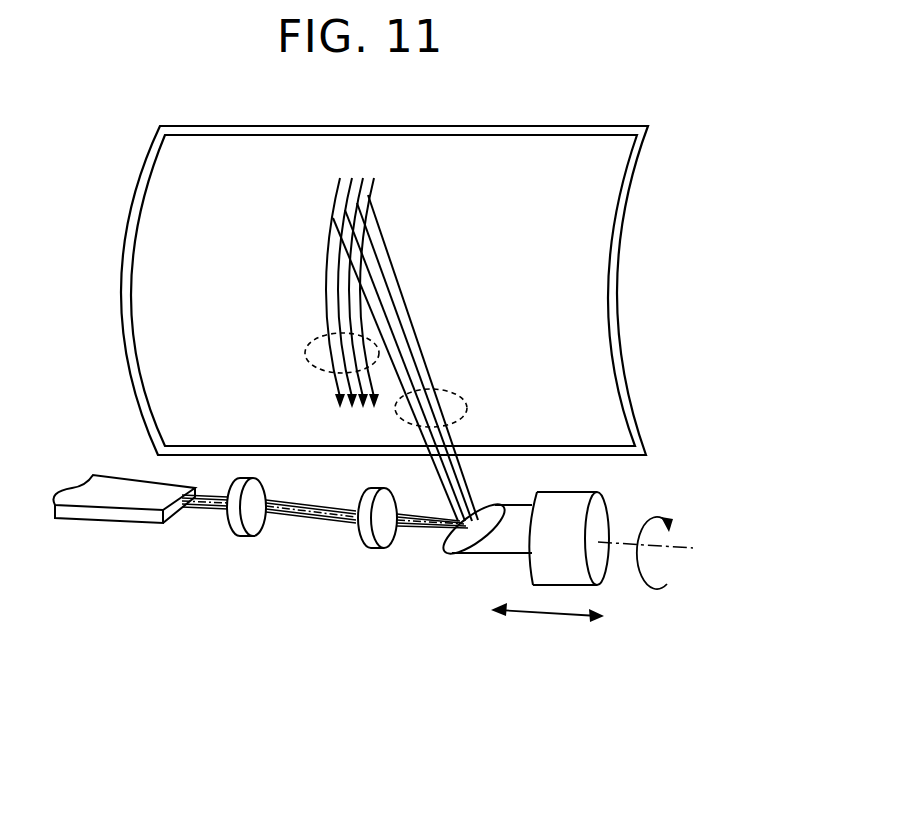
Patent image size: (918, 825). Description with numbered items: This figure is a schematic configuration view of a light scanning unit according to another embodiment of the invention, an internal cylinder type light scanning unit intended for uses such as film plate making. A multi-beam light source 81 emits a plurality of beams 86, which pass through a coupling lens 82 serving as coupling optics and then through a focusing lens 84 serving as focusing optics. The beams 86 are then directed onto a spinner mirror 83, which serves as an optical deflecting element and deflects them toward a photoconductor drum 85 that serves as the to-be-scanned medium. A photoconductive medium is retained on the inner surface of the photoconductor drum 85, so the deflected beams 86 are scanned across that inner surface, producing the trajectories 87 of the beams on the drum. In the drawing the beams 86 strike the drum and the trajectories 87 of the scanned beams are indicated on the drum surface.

The multi-beam light source 81 is at (112, 526).
The coupling lens 82 is at (247, 537).
The spinner mirror 83 is at (478, 557).
The focusing lens 84 is at (373, 549).
The photoconductor drum 85 is at (583, 302).
The beams 86 is at (467, 409).
The trajectories of the beams 87 is at (305, 352).